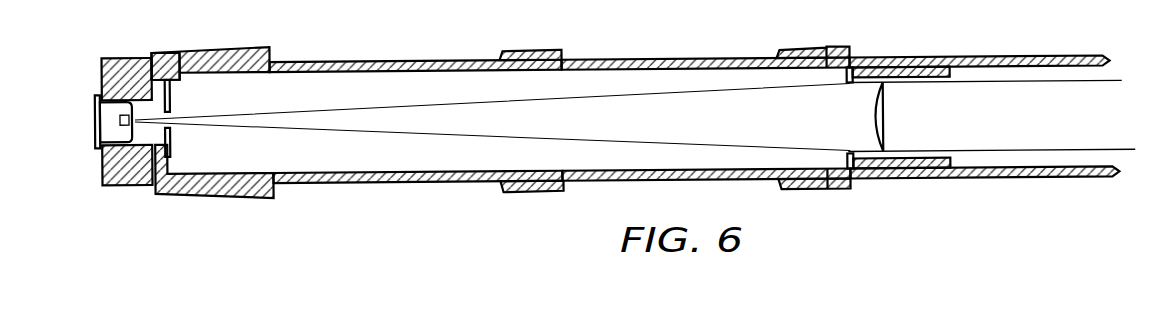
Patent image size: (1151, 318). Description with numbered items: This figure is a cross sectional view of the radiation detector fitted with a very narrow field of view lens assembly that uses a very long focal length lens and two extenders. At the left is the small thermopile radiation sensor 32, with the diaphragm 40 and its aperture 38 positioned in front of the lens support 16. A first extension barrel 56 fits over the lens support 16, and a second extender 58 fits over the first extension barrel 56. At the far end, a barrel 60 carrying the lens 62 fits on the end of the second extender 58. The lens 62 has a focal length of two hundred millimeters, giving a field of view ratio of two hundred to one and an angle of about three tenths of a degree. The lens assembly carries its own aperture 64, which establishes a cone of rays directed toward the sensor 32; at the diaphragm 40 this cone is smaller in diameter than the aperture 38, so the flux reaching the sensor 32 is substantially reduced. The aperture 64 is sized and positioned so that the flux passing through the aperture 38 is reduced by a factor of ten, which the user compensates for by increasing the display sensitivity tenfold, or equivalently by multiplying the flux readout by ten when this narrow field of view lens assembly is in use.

The lens support 16 is at (187, 54).
The thermopile radiation sensor 32 is at (118, 121).
The aperture 38 is at (174, 128).
The diaphragm 40 is at (176, 91).
The first extension barrel 56 is at (398, 62).
The second extender 58 is at (677, 60).
The barrel 60 is at (970, 55).
The lens 62 is at (883, 133).
The aperture 64 is at (840, 47).